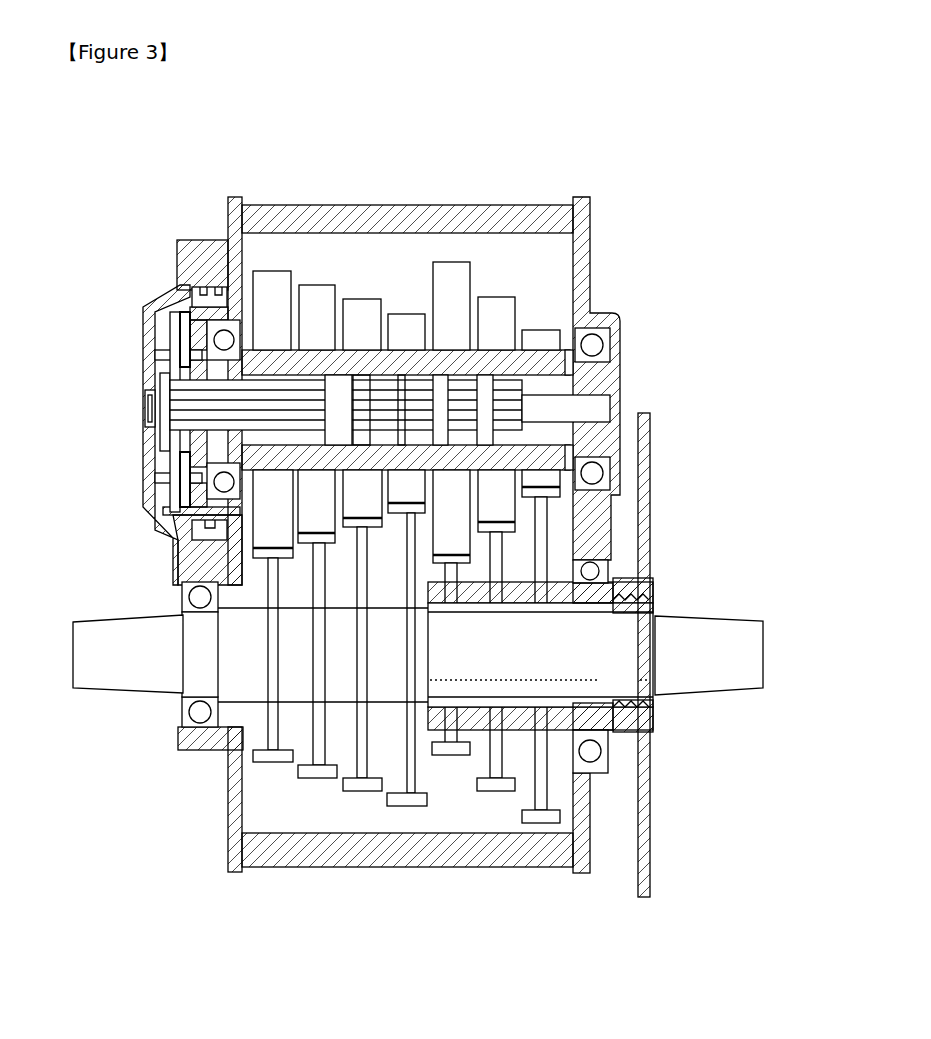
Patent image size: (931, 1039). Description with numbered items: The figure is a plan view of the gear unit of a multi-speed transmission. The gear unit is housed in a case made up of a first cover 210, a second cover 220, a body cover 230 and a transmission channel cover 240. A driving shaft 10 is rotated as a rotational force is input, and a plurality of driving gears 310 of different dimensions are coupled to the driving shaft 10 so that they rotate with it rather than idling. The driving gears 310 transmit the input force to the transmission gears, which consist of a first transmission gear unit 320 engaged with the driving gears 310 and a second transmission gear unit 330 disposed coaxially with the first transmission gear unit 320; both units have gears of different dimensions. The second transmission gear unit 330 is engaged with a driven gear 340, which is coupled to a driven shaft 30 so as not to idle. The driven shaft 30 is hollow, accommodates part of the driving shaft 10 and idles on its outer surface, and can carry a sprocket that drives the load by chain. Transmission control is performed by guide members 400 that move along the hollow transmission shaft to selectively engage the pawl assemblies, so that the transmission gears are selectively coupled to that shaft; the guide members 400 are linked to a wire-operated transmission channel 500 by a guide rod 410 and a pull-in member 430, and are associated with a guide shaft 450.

The driving shaft 10 is at (123, 680).
The driven shaft 30 is at (620, 597).
The first cover 210 is at (210, 243).
The second cover 220 is at (583, 255).
The body cover 230 is at (390, 206).
The transmission channel cover 240 is at (148, 456).
The driving gear 310 is at (270, 780).
The first transmission gear unit 320 is at (405, 313).
The second transmission gear unit 330 is at (540, 330).
The driven gear 340 is at (447, 780).
The guide member 400 is at (507, 428).
The guide rod 410 is at (152, 333).
The pull-in member 430 is at (150, 368).
The guide shaft 450 is at (593, 403).
The transmission channel 500 is at (150, 343).